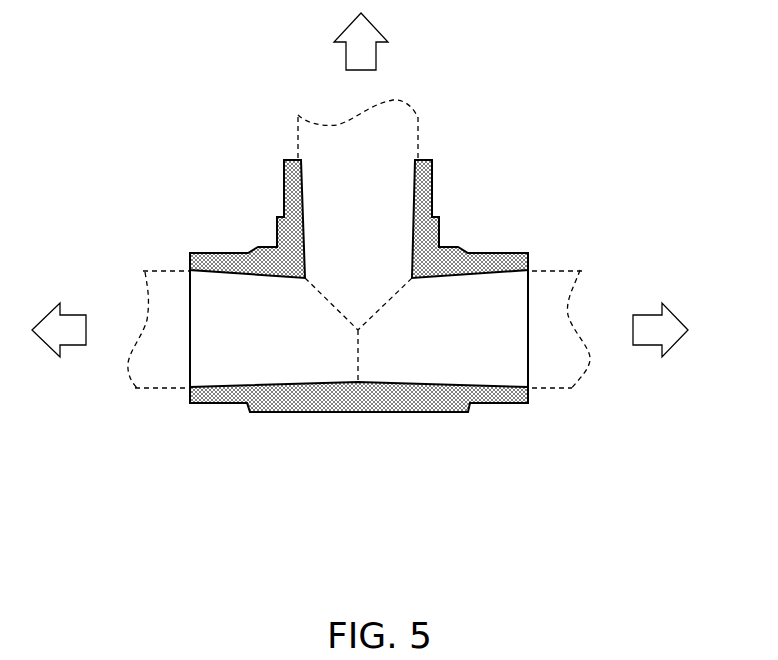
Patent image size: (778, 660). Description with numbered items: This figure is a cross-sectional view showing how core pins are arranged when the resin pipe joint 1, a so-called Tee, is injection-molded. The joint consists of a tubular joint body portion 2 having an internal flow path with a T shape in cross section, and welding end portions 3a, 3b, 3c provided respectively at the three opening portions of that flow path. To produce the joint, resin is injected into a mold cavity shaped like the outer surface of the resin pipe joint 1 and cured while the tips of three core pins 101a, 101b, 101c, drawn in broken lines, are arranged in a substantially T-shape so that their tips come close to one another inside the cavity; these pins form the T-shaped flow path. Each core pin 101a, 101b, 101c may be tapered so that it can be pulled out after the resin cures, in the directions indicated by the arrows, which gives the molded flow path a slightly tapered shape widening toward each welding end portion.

The resin pipe joint 1 is at (543, 125).
The tubular joint body portion 2 is at (402, 412).
The welding end portion 3a is at (420, 157).
The welding end portion 3b is at (528, 262).
The welding end portion 3c is at (190, 394).
The core pin 101a is at (298, 130).
The core pin 101b is at (562, 392).
The core pin 101c is at (157, 270).